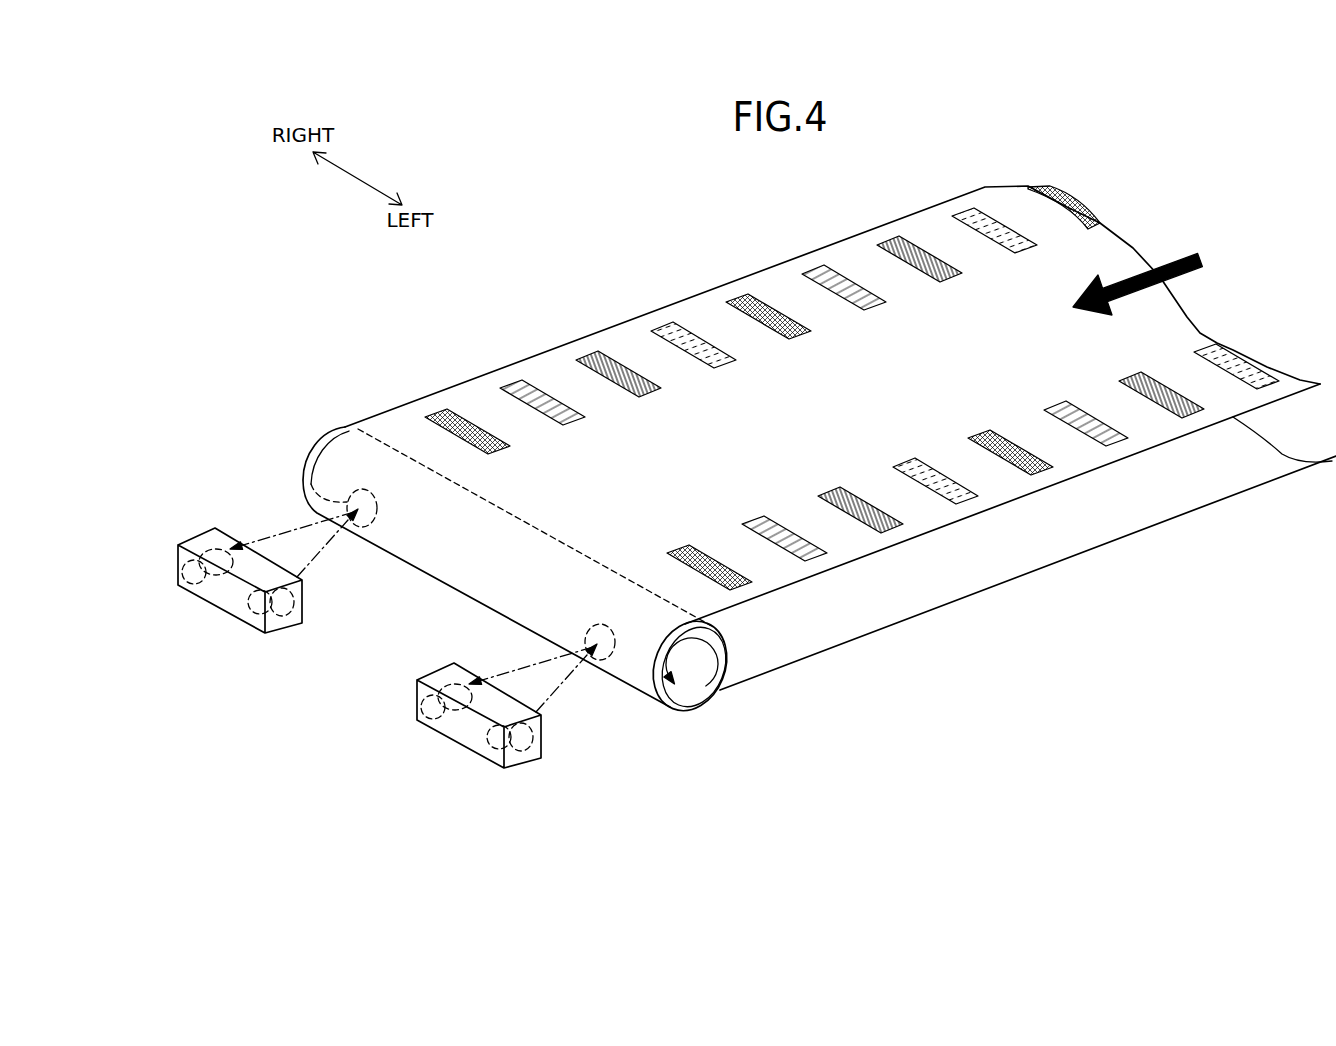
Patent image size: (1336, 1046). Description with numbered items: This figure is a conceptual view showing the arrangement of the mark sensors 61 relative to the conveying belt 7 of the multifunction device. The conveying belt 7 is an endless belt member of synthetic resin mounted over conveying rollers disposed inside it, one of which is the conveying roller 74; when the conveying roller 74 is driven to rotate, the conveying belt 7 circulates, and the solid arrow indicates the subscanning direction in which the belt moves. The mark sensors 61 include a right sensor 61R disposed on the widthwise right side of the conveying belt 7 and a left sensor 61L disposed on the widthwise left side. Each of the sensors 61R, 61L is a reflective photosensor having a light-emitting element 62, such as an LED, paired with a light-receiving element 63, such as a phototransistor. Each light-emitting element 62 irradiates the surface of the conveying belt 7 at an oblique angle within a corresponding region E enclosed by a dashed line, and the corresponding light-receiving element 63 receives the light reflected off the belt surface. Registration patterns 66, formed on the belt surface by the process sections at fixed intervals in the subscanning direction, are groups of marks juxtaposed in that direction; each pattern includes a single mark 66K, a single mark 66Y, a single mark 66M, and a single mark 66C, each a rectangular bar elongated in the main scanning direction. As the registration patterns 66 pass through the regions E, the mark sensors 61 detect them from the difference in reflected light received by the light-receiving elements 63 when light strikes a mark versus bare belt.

The conveying belt 7 is at (587, 344).
The conveying roller 74 is at (687, 697).
The registration patterns 66 is at (843, 441).
The mark 66K is at (450, 409).
The mark 66C is at (824, 551).
The mark 66M is at (895, 522).
The mark 66Y is at (965, 419).
The region E is at (347, 502).
The mark sensors 61 is at (387, 638).
The right sensor 61R is at (287, 628).
The left sensor 61L is at (447, 706).
The light-emitting element 62 is at (248, 622).
The light-receiving element 63 is at (183, 587).